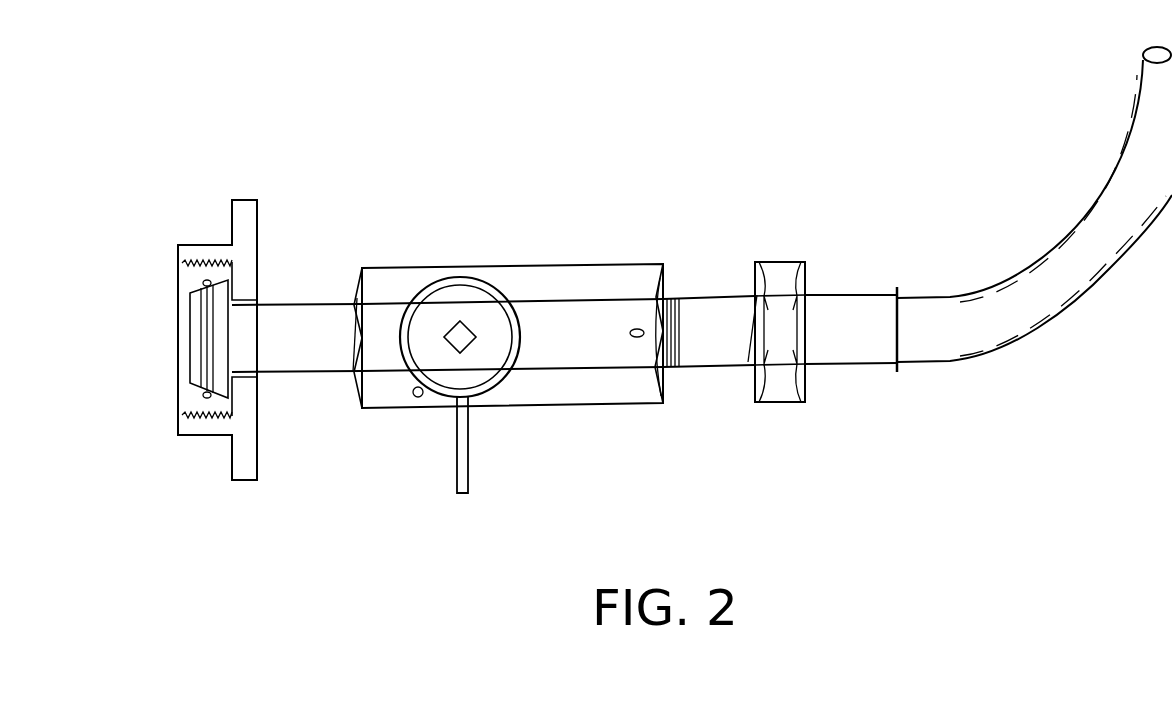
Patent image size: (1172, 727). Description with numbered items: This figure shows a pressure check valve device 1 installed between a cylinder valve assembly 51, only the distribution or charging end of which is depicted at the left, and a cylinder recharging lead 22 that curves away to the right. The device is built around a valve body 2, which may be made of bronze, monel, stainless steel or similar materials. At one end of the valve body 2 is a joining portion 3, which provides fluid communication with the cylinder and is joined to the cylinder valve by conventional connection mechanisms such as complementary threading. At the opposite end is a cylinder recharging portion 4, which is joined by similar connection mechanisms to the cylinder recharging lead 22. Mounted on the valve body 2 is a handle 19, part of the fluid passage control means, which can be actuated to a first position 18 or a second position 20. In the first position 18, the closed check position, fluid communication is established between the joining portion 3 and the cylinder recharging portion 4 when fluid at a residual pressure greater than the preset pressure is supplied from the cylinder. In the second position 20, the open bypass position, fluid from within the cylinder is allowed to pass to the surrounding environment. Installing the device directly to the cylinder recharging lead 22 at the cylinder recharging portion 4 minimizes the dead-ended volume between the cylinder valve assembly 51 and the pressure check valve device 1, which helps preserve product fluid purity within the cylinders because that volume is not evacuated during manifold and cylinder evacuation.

The pressure check valve device 1 is at (522, 332).
The valve body 2 is at (512, 311).
The joining portion 3 is at (339, 365).
The cylinder recharging portion 4 is at (693, 366).
The first position 18 is at (392, 425).
The handle 19 is at (505, 456).
The second position 20 is at (679, 267).
The cylinder recharging lead 22 is at (988, 257).
The cylinder valve assembly 51 is at (250, 302).